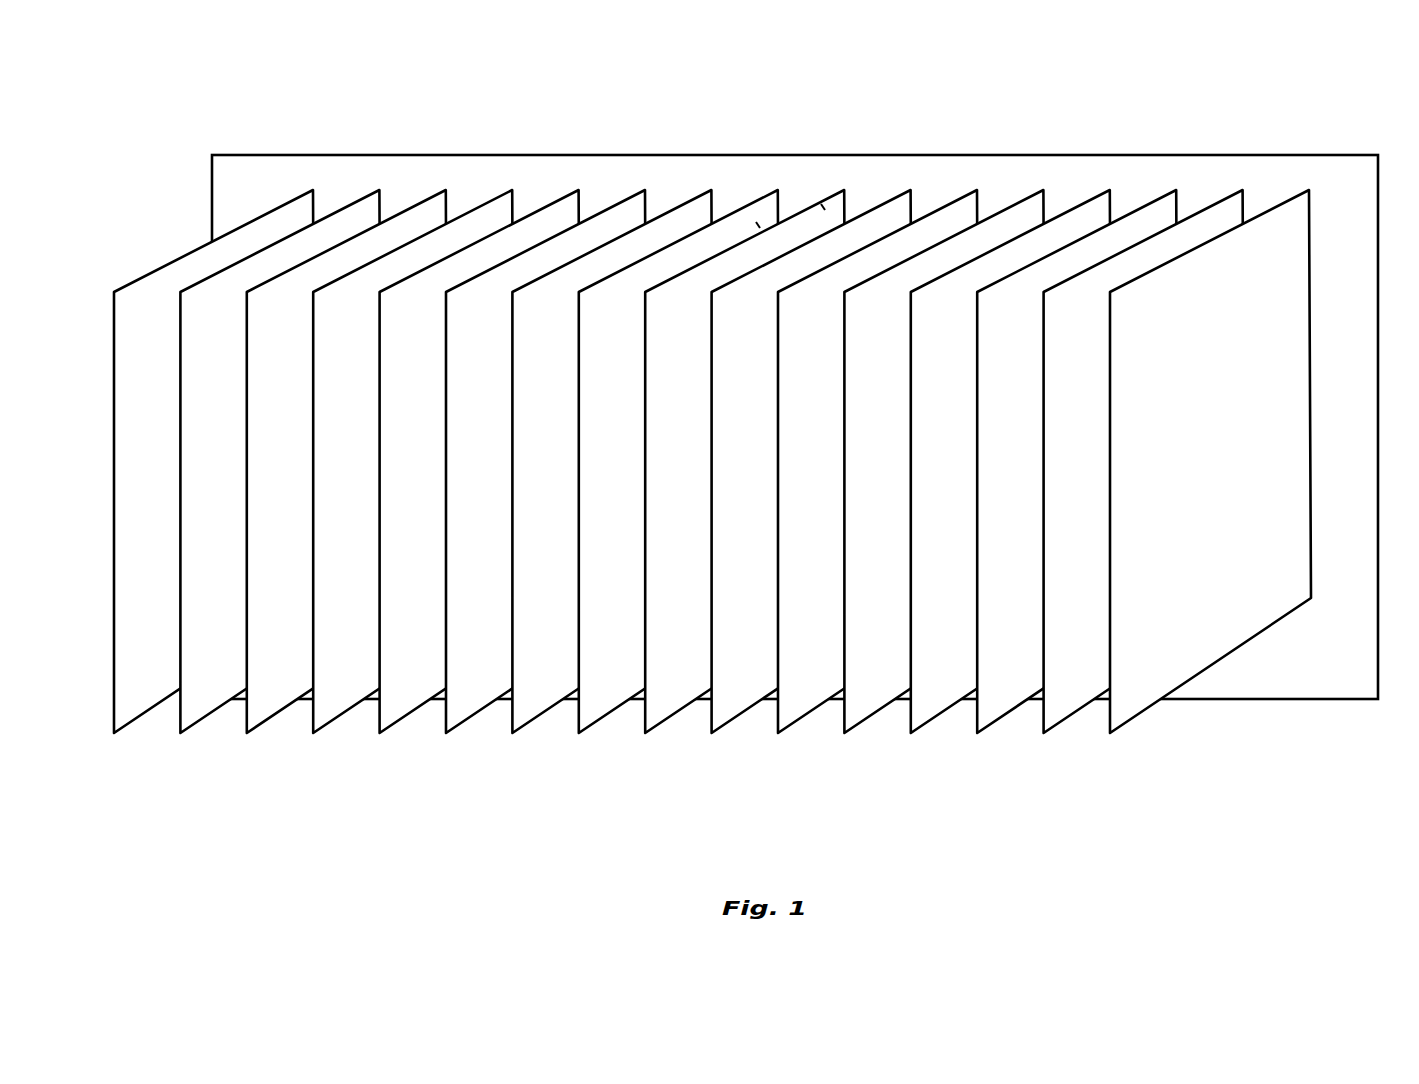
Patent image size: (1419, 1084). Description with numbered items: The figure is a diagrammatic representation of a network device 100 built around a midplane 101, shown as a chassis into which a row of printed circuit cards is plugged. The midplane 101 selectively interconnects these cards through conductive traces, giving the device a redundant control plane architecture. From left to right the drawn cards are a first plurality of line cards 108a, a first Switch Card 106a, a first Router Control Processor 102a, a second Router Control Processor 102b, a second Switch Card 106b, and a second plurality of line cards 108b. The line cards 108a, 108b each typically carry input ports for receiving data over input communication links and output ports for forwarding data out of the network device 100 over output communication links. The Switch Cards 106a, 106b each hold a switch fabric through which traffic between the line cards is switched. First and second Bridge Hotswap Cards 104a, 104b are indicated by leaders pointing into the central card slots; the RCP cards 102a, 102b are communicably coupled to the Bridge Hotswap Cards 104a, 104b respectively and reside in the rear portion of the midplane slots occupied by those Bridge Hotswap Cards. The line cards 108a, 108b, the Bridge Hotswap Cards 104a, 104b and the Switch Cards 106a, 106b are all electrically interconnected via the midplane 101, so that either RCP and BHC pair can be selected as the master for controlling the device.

The network device 100 is at (737, 485).
The midplane 101 is at (1303, 677).
The first Router Control Processor 102a is at (597, 707).
The second Router Control Processor 102b is at (653, 707).
The first Bridge Hotswap Card 104a is at (758, 225).
The second Bridge Hotswap Card 104b is at (823, 207).
The first Switch Card 106a is at (478, 733).
The second Switch Card 106b is at (678, 733).
The first plurality of line cards 108a is at (97, 750).
The second plurality of line cards 108b is at (1130, 752).